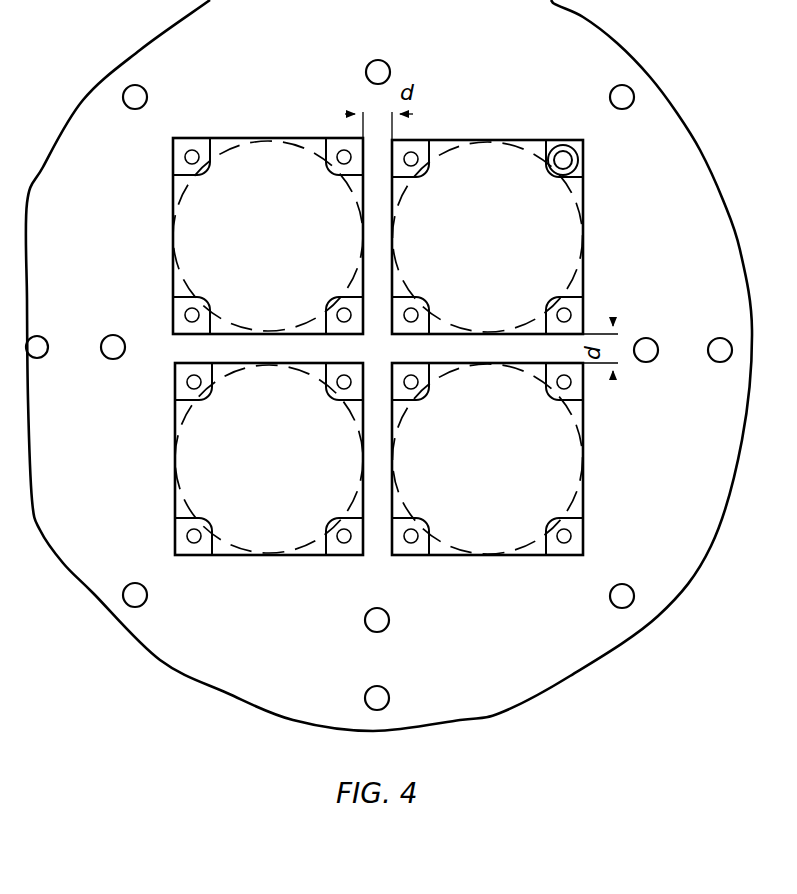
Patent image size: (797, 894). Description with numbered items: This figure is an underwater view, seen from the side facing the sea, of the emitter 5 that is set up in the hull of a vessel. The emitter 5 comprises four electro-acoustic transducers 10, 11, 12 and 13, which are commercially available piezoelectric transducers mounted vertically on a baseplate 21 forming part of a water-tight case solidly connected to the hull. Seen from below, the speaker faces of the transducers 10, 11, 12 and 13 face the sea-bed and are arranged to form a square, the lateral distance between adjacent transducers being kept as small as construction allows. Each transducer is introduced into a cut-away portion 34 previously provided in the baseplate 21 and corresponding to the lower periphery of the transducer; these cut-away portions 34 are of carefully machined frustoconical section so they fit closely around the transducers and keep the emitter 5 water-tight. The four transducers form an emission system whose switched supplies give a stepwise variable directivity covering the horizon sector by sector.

The emitter 5 is at (389, 365).
The baseplate 21 is at (693, 190).
The electro-acoustic transducer 10 is at (268, 236).
The electro-acoustic transducer 11 is at (487, 237).
The electro-acoustic transducer 12 is at (269, 459).
The electro-acoustic transducer 13 is at (487, 459).
The cut-away portion 34 is at (178, 217).